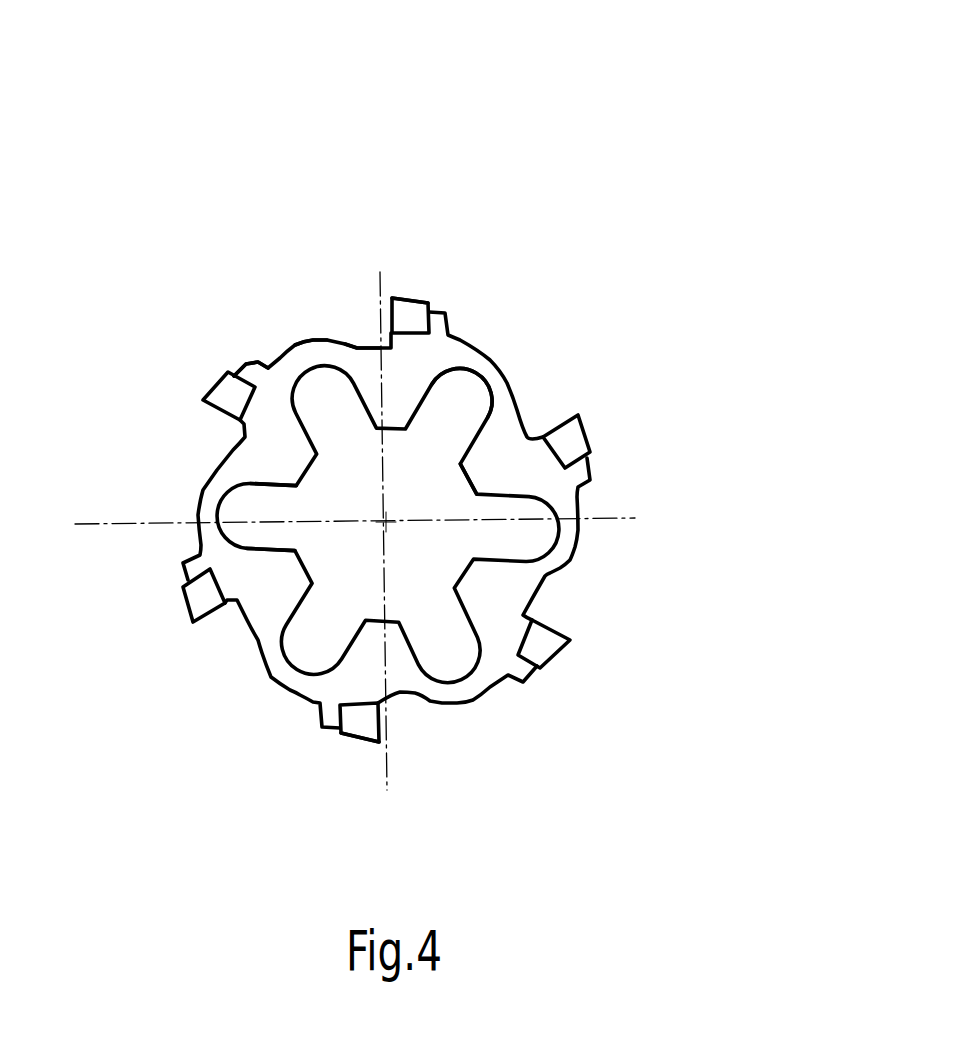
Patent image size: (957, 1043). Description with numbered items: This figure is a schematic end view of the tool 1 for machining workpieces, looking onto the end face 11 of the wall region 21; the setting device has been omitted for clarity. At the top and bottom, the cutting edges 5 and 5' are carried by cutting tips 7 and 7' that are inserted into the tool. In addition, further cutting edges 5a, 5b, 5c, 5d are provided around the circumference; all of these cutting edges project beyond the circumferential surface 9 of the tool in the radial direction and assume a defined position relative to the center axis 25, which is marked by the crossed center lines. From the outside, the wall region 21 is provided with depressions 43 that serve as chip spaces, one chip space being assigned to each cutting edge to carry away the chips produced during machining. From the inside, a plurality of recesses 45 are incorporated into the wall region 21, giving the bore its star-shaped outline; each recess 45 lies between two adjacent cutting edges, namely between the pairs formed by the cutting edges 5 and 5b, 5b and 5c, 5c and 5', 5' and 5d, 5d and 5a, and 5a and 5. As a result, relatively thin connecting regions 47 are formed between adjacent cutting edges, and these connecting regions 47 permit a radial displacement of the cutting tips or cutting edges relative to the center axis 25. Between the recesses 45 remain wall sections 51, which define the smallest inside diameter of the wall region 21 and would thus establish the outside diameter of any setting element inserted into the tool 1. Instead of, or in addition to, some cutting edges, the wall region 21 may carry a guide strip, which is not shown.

The tool 1 is at (537, 189).
The cutting edge 5 is at (404, 229).
The further cutting edge 5a is at (203, 400).
The further cutting edge 5b is at (580, 410).
The further cutting edge 5c is at (575, 640).
The further cutting edge 5d is at (192, 628).
The cutting edge 5' is at (373, 794).
The cutting tip 7 is at (429, 251).
The cutting tip 7' is at (329, 810).
The circumferential surface 9 is at (240, 362).
The end face 11 is at (278, 597).
The wall region 21 is at (250, 470).
The center axis 25 is at (384, 522).
The depressions 43 is at (363, 347).
The recesses 45 is at (465, 400).
The connecting regions 47 is at (307, 347).
The wall sections 51 is at (480, 478).